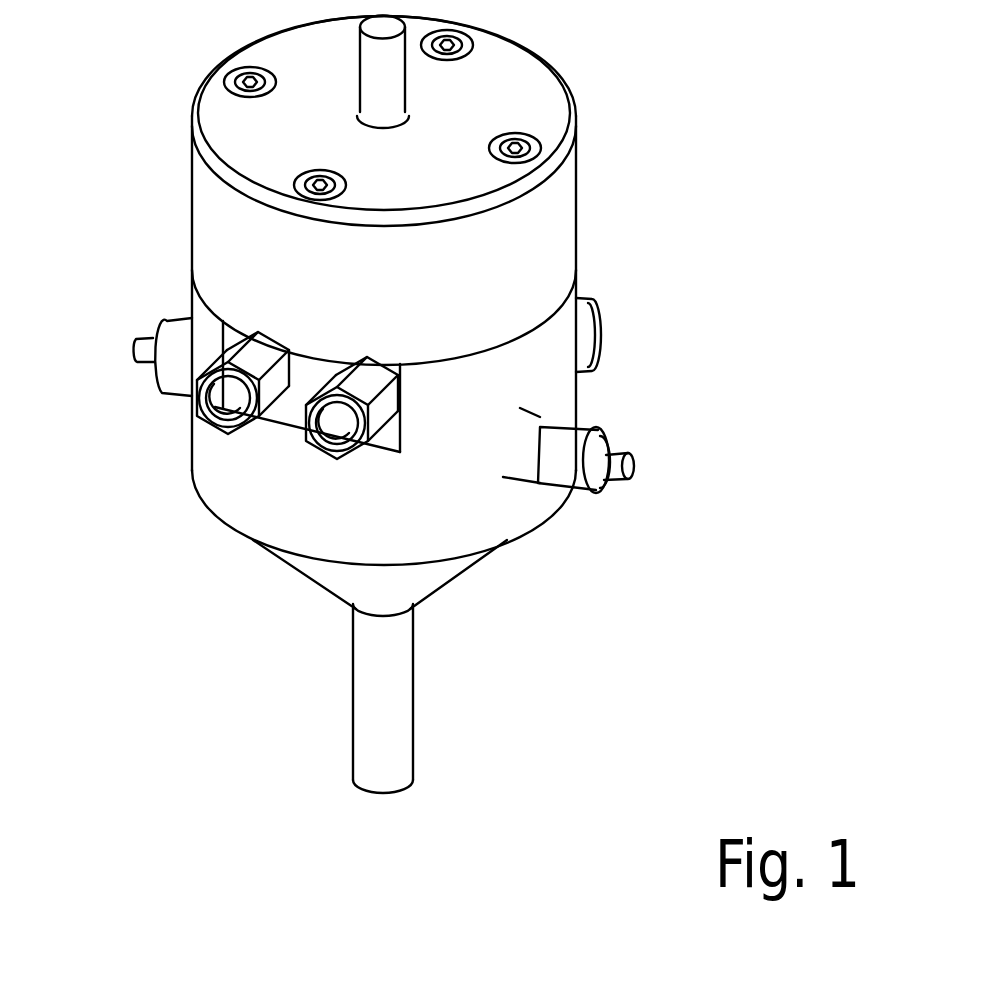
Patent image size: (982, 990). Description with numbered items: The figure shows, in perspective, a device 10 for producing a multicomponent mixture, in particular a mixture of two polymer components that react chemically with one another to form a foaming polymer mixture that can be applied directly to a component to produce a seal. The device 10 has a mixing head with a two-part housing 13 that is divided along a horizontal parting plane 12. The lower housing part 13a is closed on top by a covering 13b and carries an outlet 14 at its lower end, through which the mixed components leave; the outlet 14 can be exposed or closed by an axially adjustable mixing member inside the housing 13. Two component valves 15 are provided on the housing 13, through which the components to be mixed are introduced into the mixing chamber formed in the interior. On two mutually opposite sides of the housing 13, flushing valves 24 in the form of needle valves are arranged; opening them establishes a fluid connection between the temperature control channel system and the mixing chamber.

The device 10 is at (678, 92).
The horizontal parting plane 12 is at (192, 310).
The two-part housing 13 is at (310, 345).
The covering 13b is at (464, 310).
The lower housing part 13a is at (418, 528).
The outlet 14 is at (398, 710).
The component valve 15 is at (597, 343).
The flushing valve 24 is at (172, 369).